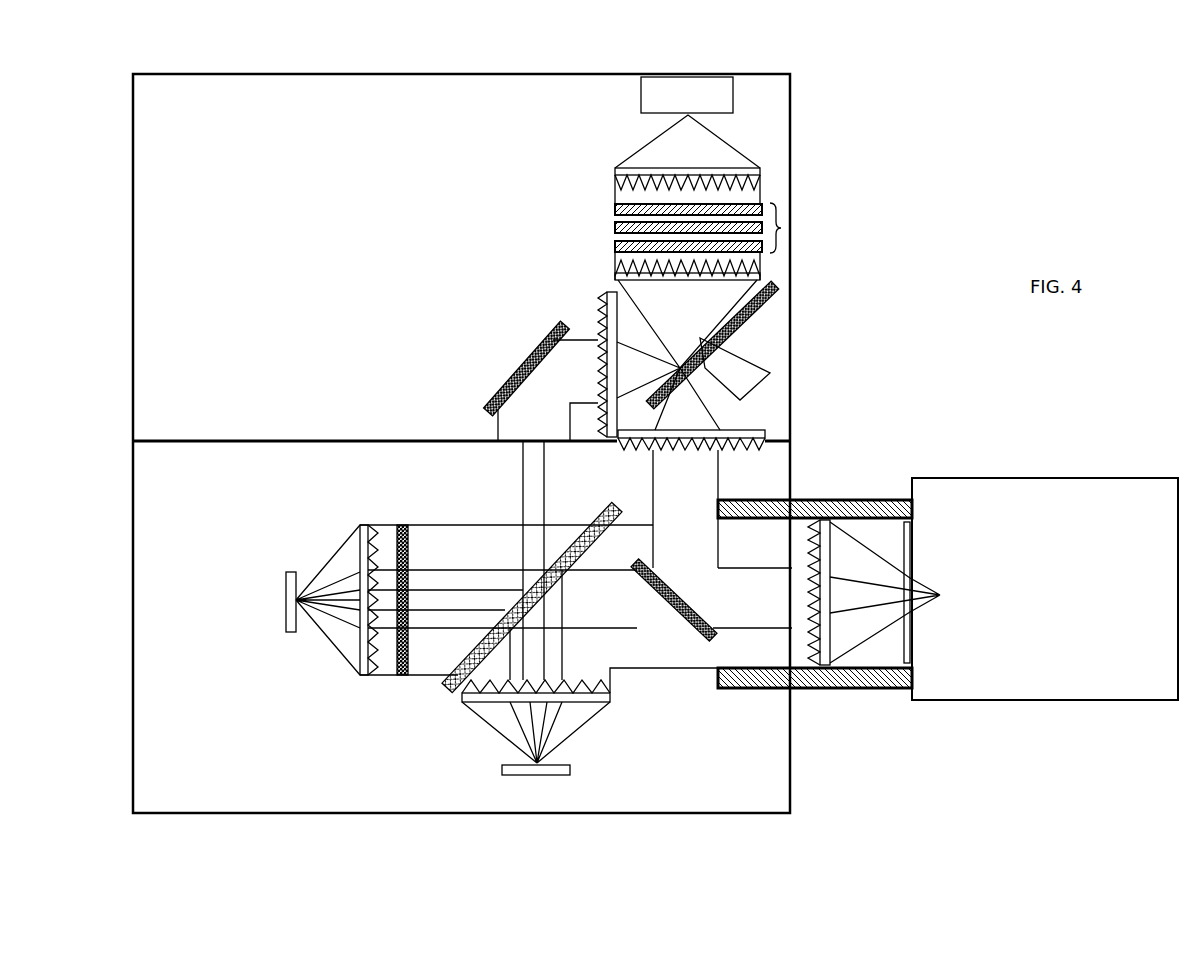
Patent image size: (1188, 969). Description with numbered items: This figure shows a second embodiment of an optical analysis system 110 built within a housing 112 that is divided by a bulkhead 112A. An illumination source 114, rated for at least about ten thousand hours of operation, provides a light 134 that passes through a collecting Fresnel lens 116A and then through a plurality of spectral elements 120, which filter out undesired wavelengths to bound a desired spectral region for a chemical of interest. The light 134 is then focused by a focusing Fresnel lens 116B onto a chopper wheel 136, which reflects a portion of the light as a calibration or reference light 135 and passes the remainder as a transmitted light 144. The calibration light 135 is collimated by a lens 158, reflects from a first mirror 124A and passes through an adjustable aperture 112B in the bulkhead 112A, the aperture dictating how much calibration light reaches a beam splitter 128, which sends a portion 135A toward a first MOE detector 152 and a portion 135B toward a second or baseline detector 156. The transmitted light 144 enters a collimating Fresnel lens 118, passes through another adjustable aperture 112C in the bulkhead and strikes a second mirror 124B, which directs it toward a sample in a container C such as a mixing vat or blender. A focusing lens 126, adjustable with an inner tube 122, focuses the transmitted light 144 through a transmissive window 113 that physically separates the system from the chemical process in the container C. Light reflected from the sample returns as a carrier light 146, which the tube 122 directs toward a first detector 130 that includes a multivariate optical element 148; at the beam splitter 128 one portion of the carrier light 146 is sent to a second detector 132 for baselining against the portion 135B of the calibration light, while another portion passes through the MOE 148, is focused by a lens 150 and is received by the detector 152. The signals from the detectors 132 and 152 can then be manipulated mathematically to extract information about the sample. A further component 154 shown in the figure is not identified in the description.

The optical analysis system 110 is at (1016, 161).
The housing 112 is at (765, 815).
The bulkhead 112A is at (287, 441).
The adjustable aperture 112B is at (517, 441).
The adjustable aperture 112C is at (768, 441).
The transmissive window 113 is at (920, 630).
The illumination source 114 is at (733, 85).
The collecting Fresnel lens 116A is at (613, 173).
The focusing Fresnel lens 116B is at (613, 262).
The collimating Fresnel lens 118 is at (752, 427).
The spectral elements 120 is at (782, 228).
The inner tube 122 is at (895, 687).
The first mirror 124A is at (520, 365).
The second mirror 124B is at (672, 580).
The focusing Fresnel lens 126 is at (827, 658).
The beam splitter 128 is at (571, 540).
The first detector 130 is at (316, 527).
The second detector 132 is at (636, 768).
The light 134 is at (735, 148).
The calibration light 135 is at (528, 423).
The portion of calibration light 135A is at (490, 597).
The portion of calibration light 135B is at (540, 650).
The chopper wheel 136 is at (778, 300).
The transmitted light 144 is at (752, 598).
The carrier light 146 is at (866, 500).
The multivariate optical element 148 is at (402, 676).
The lens 150 is at (360, 676).
The MOE detector 152 is at (286, 633).
The aperture 154 is at (610, 697).
The baseline detector 156 is at (552, 777).
The lens 158 is at (598, 293).
The container C is at (1082, 478).